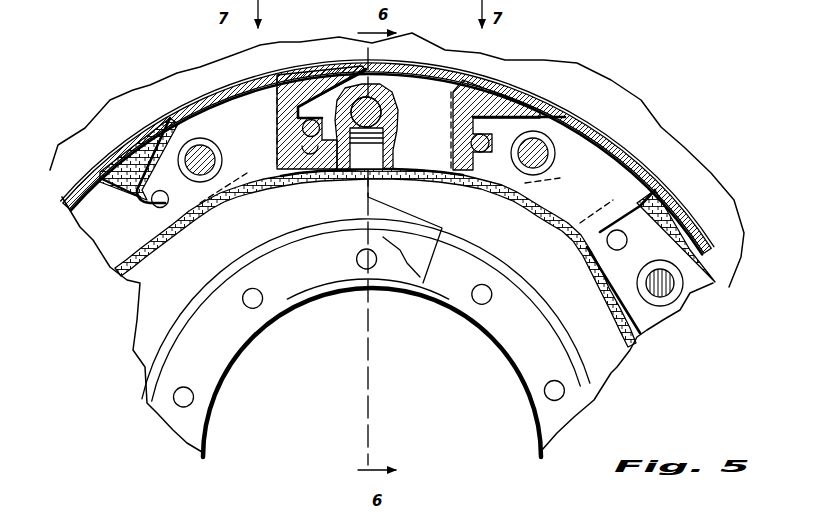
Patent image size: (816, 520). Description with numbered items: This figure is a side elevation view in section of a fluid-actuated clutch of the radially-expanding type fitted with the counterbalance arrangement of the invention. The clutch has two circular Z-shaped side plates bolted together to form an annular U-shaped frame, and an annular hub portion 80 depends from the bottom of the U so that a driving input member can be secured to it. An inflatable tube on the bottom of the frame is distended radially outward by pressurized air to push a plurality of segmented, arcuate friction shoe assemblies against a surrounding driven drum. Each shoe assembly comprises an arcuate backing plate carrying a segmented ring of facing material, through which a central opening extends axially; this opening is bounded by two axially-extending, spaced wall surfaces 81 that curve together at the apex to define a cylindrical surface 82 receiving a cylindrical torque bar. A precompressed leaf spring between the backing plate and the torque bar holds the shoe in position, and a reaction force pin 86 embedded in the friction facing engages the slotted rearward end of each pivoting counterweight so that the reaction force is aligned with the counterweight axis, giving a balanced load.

The annular hub portion 80 is at (225, 358).
The wall surfaces 81 is at (383, 127).
The cylindrical surface 82 is at (397, 95).
The reaction force pin 86 is at (152, 203).